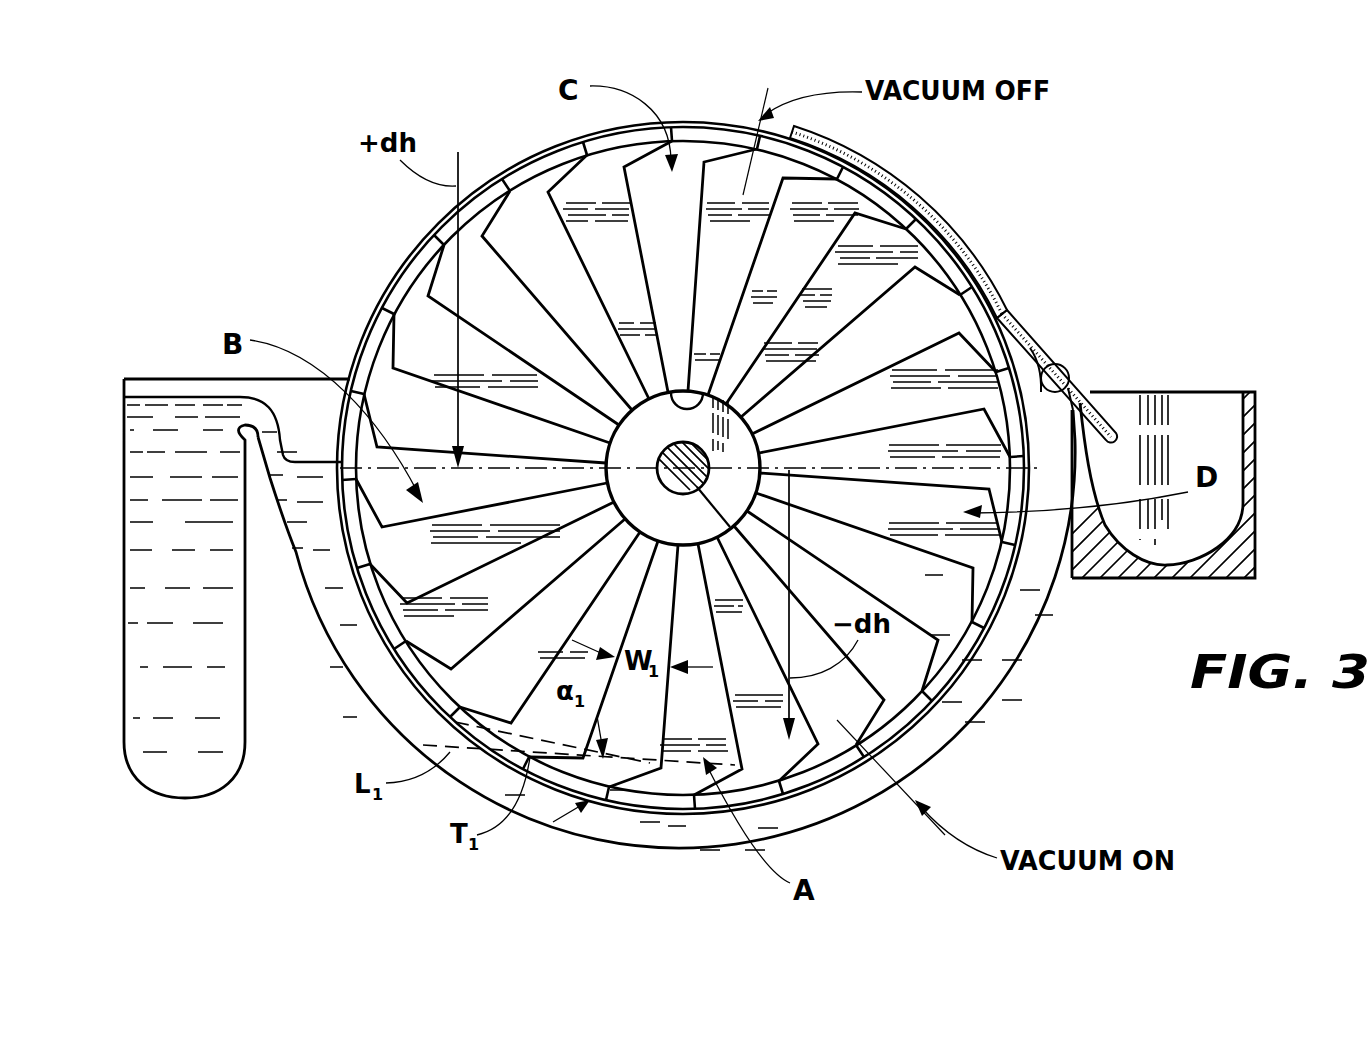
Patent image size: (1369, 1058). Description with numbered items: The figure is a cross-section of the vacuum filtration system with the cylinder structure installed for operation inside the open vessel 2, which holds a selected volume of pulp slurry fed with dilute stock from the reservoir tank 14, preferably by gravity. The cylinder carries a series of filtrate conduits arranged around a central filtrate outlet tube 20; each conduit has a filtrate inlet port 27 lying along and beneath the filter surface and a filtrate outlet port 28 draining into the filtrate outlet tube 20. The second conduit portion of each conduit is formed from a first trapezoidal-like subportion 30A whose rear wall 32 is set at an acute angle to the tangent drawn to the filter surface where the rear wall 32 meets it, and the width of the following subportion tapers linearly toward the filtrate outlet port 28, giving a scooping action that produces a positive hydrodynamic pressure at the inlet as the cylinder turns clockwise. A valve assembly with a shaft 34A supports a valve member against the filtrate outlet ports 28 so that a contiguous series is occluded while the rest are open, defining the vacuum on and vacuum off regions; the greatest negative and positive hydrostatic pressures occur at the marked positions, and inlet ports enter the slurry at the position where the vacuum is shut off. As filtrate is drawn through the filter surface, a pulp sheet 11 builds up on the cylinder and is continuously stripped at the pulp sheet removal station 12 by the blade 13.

The vessel 2 is at (955, 760).
The pulp sheet 11 is at (1012, 305).
The pulp sheet removal station 12 is at (1103, 310).
The blade 13 is at (1078, 349).
The reservoir tank 14 is at (123, 600).
The filtrate outlet tube 20 is at (690, 443).
The filtrate inlet port 27 is at (400, 272).
The filtrate outlet port 28 is at (603, 422).
The first trapezoidal-like subportion 30A is at (522, 742).
The rear wall 32 is at (522, 745).
The shaft 34A is at (757, 492).